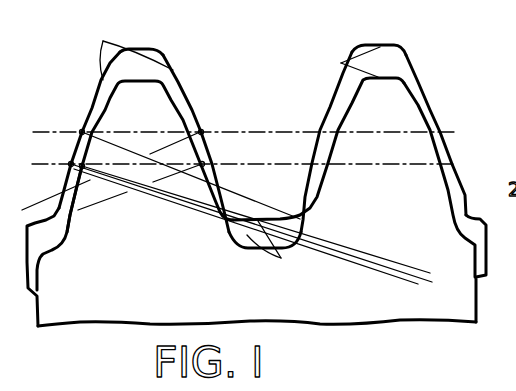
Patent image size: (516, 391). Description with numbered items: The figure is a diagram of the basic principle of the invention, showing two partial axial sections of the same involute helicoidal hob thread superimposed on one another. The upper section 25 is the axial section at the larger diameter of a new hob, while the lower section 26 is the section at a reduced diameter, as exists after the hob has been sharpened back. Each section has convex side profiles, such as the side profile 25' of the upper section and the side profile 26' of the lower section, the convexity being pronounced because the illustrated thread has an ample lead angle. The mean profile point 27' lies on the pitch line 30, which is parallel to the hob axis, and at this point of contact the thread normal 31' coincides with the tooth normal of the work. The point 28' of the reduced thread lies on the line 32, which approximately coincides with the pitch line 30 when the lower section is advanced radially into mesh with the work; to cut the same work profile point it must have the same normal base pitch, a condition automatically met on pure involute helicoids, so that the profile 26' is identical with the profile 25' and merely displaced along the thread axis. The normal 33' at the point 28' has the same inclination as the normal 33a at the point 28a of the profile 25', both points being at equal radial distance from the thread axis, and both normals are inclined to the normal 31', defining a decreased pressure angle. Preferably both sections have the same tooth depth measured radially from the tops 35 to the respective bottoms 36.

The upper section 25 is at (133, 48).
The side profile 25' is at (76, 130).
The lower section 26 is at (150, 156).
The side profile 26' is at (74, 228).
The mean profile point 27' is at (66, 123).
The point 28' is at (62, 157).
The point 28a is at (69, 166).
The pitch line 30 is at (262, 132).
The thread normal 31' is at (191, 175).
The line 32 is at (332, 164).
The normal 33' is at (256, 219).
The normal 33a is at (202, 208).
The top 35 is at (360, 61).
The bottom 36 is at (281, 258).